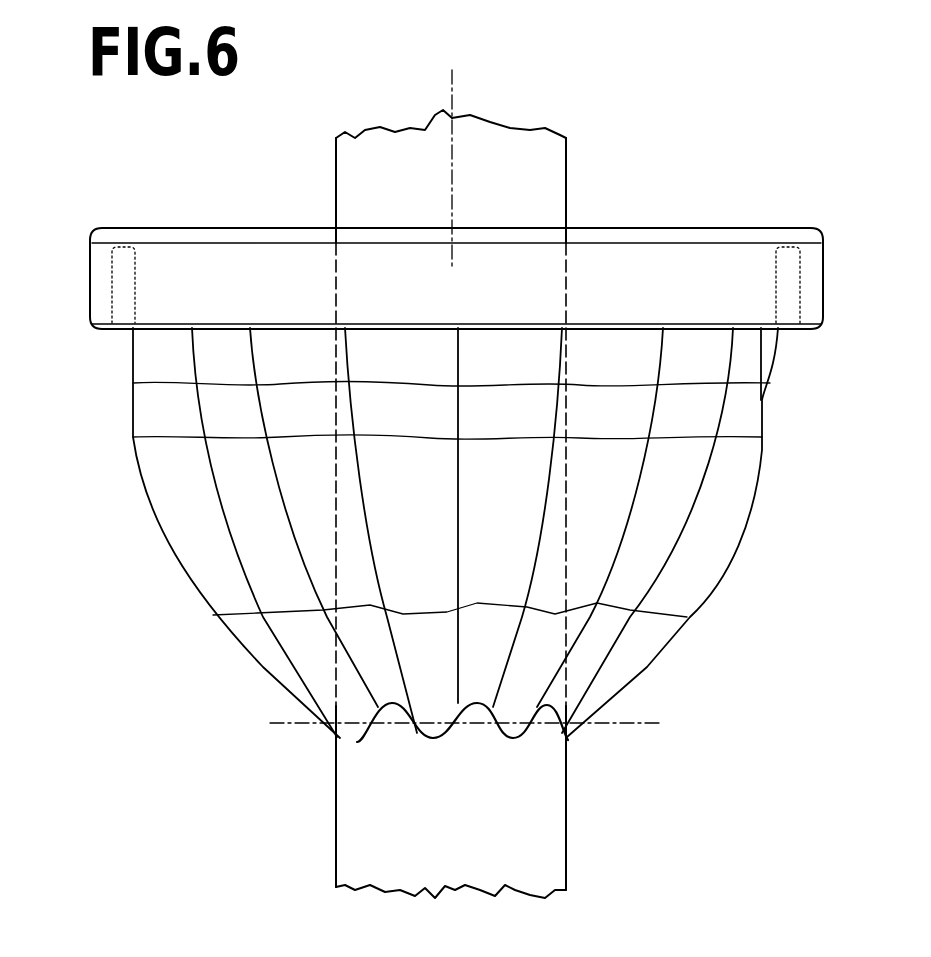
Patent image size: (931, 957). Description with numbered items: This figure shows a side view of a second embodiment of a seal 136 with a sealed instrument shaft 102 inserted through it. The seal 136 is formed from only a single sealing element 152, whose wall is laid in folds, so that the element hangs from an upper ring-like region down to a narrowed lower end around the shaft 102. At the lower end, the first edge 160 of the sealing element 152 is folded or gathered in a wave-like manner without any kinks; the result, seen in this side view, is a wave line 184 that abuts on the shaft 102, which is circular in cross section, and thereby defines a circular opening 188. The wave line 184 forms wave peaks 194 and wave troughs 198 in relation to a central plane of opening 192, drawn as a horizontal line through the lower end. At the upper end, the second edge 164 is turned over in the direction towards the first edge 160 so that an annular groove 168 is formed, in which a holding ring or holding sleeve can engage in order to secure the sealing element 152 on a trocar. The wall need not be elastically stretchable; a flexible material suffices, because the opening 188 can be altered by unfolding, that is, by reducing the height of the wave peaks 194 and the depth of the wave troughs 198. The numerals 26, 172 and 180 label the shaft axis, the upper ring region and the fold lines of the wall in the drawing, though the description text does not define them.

The longitudinal axis 26 is at (452, 80).
The instrument shaft 102 is at (567, 183).
The seal 136 is at (767, 203).
The sealing element 152 is at (763, 453).
The first edge 160 is at (357, 745).
The second edge 164 is at (117, 331).
The annular groove 168 is at (121, 252).
The ring 172 is at (112, 228).
The wires 180 is at (458, 428).
The wave line 184 is at (517, 741).
The opening 188 is at (473, 730).
The central plane of opening 192 is at (637, 722).
The wave peaks 194 is at (435, 742).
The wave troughs 198 is at (403, 731).